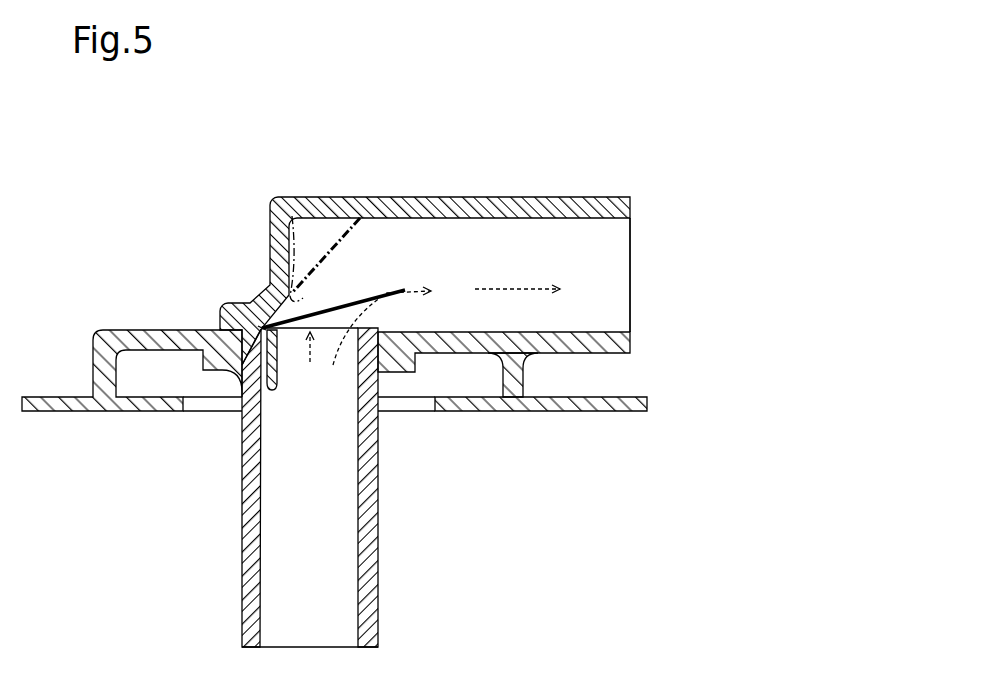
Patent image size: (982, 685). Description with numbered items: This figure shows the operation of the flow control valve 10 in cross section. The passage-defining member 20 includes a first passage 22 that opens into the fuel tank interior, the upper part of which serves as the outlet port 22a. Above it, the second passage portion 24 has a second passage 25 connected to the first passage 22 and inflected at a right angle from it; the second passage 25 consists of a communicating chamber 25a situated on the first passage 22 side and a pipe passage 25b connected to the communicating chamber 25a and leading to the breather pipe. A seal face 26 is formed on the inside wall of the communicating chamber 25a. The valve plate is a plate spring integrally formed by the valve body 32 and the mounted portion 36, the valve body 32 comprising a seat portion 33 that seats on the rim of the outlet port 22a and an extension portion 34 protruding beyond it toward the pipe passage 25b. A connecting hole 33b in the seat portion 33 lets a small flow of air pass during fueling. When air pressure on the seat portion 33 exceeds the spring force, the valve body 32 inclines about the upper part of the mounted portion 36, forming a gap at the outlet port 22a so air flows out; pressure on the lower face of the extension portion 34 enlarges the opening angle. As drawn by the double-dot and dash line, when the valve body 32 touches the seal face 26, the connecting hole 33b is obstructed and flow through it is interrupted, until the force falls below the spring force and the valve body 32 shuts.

The flow control valve 10 is at (152, 174).
The passage-defining member 20 is at (334, 432).
The first passage 22 is at (326, 519).
The outlet port 22a is at (350, 318).
The second passage portion 24 is at (270, 222).
The second passage 25 is at (455, 245).
The communicating chamber 25a is at (437, 271).
The pipe passage 25b is at (530, 271).
The seal face 26 is at (270, 262).
The valve body 32 is at (338, 133).
The seat portion 33 is at (292, 216).
The connecting hole 33b is at (268, 295).
The extension portion 34 is at (305, 282).
The mounted portion 36 is at (258, 327).